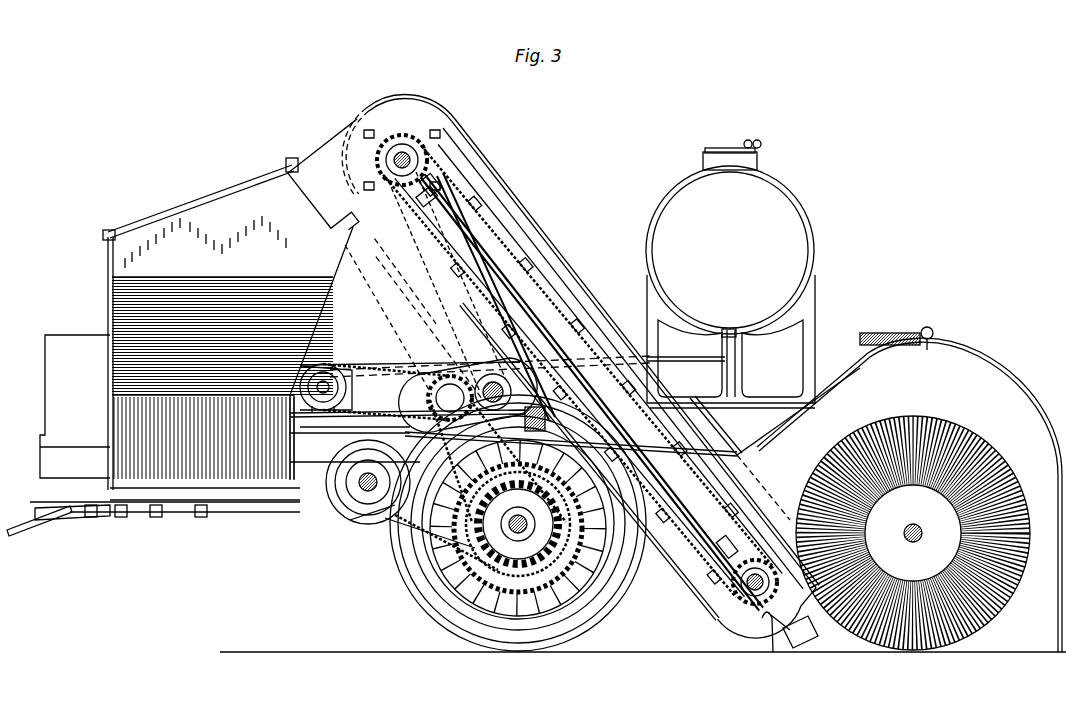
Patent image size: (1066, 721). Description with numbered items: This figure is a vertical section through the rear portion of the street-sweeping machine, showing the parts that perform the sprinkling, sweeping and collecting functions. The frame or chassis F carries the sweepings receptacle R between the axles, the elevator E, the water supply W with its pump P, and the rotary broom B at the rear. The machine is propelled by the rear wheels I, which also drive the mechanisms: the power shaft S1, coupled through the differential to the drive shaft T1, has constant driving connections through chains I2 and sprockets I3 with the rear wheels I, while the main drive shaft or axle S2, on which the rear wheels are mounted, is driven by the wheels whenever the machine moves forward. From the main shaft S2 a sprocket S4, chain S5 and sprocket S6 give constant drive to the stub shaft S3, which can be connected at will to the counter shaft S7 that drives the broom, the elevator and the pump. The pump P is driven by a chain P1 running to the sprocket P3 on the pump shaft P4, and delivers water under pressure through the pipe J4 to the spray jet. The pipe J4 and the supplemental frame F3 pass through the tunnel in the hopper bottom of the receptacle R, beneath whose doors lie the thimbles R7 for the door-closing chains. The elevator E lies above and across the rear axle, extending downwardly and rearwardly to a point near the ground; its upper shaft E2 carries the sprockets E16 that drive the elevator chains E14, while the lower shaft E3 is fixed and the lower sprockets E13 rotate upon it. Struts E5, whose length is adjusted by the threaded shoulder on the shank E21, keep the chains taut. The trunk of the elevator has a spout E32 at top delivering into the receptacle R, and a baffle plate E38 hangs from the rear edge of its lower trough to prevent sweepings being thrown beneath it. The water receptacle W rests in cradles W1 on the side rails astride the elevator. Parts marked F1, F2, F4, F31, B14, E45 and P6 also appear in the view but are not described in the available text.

The sweepings receptacle R is at (228, 329).
The frame part F2 is at (60, 442).
The drive shaft T1 is at (45, 510).
The water pipe J4 is at (39, 530).
The thimbles R7 is at (125, 512).
The spout E32 is at (325, 200).
The elevator E is at (538, 240).
The elevator chains E14 is at (558, 268).
The struts E5 is at (482, 222).
The shank E21 is at (432, 182).
The upper shaft E2 is at (394, 160).
The upper sprockets E16 is at (375, 202).
The elevator casing guide E45 is at (395, 285).
The lower shaft E3 is at (753, 592).
The lower sprockets E13 is at (740, 572).
The baffle plate E38 is at (800, 645).
The frame support F31 is at (772, 652).
The water receptacle W is at (730, 238).
The cradles W1 is at (768, 318).
The rotary broom B is at (913, 521).
The wheel fender B14 is at (950, 352).
The frame F is at (519, 409).
The frame member F1 is at (775, 444).
The supplemental frame F3 is at (418, 428).
The frame bracket F4 is at (537, 430).
The pump P is at (323, 380).
The pump chain P1 is at (350, 370).
The pump shaft P4 is at (327, 424).
The pump sprocket P3 is at (368, 412).
The pulley belt P6 is at (386, 392).
The stub shaft S3 is at (440, 385).
The counter shaft S7 is at (485, 380).
The stub shaft sprocket S6 is at (441, 370).
The chain S5 is at (498, 461).
The power shaft S1 is at (365, 485).
The main shaft sprocket S4 is at (518, 524).
The rear wheels I is at (600, 600).
The chains I2 is at (445, 520).
The wheel sprockets I3 is at (505, 535).
The main drive shaft S2 is at (485, 560).